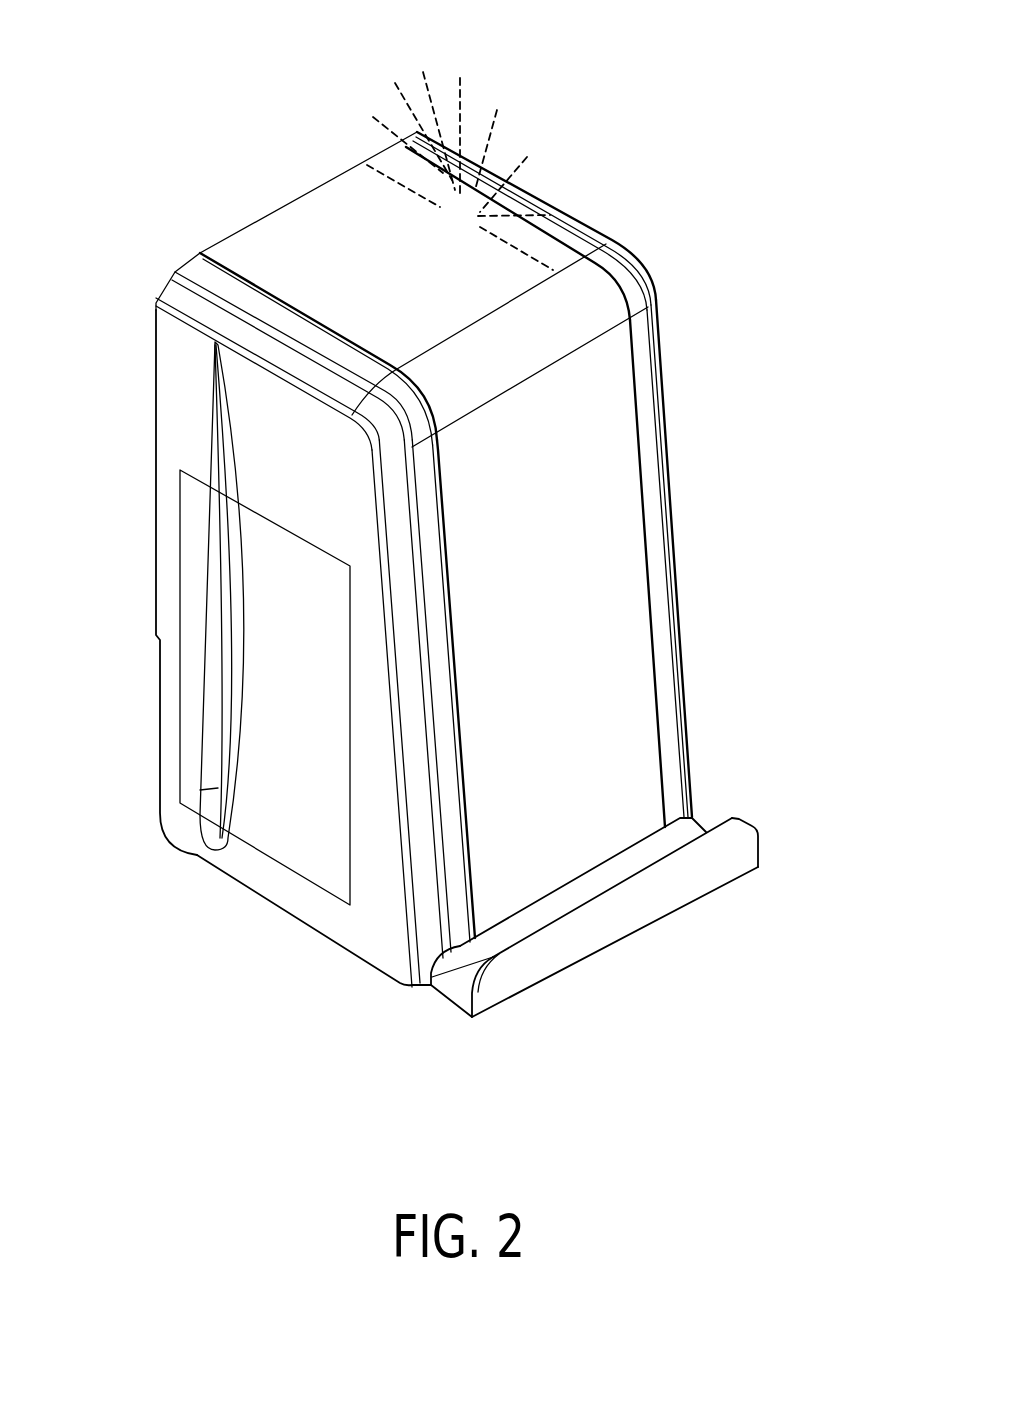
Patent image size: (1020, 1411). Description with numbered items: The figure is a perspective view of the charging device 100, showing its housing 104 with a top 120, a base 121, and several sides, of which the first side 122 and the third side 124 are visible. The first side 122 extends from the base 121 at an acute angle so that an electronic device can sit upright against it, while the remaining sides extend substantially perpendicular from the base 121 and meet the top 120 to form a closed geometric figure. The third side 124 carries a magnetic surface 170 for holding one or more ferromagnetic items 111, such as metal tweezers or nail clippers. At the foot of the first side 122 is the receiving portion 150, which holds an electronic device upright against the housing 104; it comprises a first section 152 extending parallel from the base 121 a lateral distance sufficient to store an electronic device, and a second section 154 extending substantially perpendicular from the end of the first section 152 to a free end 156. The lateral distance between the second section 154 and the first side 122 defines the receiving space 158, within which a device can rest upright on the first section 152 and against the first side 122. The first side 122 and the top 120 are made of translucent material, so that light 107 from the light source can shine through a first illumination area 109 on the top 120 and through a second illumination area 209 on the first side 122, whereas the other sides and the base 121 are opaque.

The charging device 100 is at (742, 118).
The housing 104 is at (653, 382).
The light 107 is at (462, 107).
The first illumination area 109 is at (517, 240).
The ferromagnetic items 111 is at (213, 590).
The top 120 is at (282, 242).
The base 121 is at (290, 913).
The first side 122 is at (577, 628).
The third side 124 is at (190, 390).
The receiving portion 150 is at (766, 870).
The first section 152 is at (450, 993).
The second section 154 is at (650, 905).
The free end 156 is at (737, 820).
The receiving space 158 is at (702, 821).
The magnetic surface 170 is at (277, 827).
The second illumination area 209 is at (583, 513).